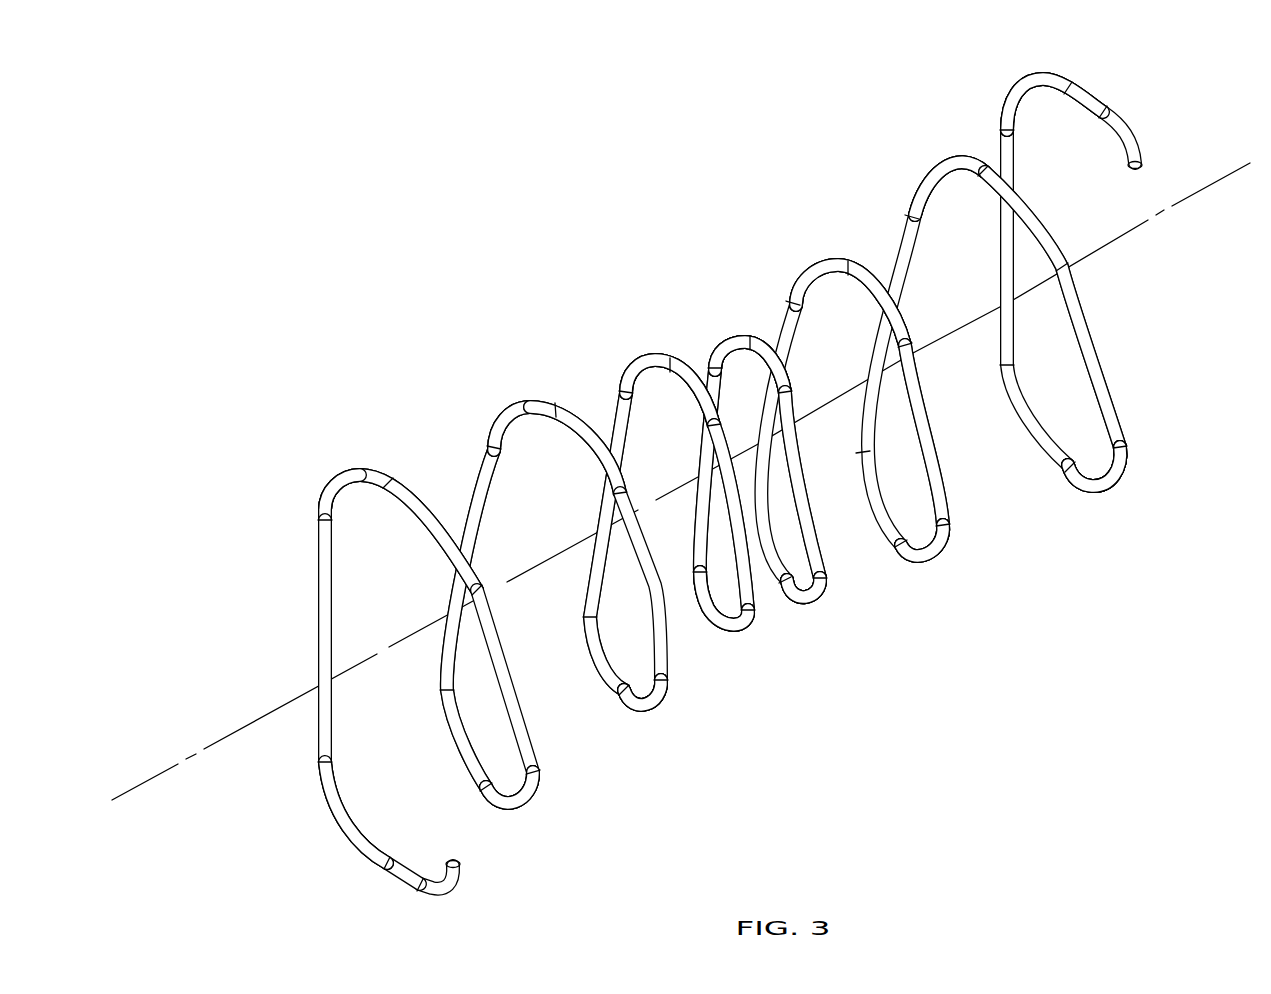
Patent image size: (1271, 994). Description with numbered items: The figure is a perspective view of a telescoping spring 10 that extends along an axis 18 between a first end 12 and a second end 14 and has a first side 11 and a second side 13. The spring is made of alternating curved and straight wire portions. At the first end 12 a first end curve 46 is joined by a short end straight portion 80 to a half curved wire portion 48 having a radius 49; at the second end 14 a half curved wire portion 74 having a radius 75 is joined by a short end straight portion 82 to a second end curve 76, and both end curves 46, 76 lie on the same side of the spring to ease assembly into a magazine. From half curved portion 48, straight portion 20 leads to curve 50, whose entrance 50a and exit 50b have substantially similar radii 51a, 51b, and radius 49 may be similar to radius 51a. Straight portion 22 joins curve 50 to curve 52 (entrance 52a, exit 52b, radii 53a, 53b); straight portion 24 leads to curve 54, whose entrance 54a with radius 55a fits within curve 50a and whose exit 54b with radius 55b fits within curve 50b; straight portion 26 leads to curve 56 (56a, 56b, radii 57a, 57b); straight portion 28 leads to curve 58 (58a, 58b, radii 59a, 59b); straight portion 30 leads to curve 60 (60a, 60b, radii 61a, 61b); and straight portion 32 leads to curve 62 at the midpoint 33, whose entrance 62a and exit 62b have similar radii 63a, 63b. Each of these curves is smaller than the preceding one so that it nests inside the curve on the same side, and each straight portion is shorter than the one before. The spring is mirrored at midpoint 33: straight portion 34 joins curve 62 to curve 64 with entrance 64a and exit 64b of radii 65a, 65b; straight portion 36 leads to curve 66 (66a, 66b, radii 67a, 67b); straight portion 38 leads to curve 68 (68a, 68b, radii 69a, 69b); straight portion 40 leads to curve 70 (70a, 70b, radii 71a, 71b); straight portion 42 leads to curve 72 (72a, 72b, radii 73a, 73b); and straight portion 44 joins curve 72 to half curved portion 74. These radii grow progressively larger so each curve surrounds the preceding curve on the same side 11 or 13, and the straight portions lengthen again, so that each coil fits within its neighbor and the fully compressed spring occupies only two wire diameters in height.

The telescoping spring 10 is at (544, 105).
The first side 11 is at (238, 455).
The first end 12 is at (294, 888).
The second side 13 is at (717, 864).
The second end 14 is at (1200, 52).
The axis 18 is at (1213, 183).
The straight portion 20 is at (312, 597).
The straight portion 22 is at (532, 740).
The straight portion 24 is at (476, 513).
The straight portion 26 is at (665, 652).
The straight portion 28 is at (617, 417).
The straight portion 30 is at (747, 595).
The straight portion 32 is at (707, 350).
The midpoint 33 is at (698, 468).
The straight portion 34 is at (828, 548).
The straight portion 36 is at (790, 301).
The straight portion 38 is at (943, 477).
The straight portion 40 is at (902, 235).
The straight portion 42 is at (1108, 395).
The straight portion 44 is at (1000, 133).
The first end curve 46 is at (450, 892).
The half curved wire portion 48 is at (340, 825).
The radius 49 is at (352, 806).
The curved portion 50 is at (392, 470).
The entrance of curve 50 50a is at (335, 480).
The exit of curve 50 50b is at (417, 498).
The radius 51a is at (352, 487).
The radius 51b is at (428, 532).
The curved portion 52 is at (492, 802).
The entrance of curve 52 52a is at (530, 808).
The exit of curve 52 52b is at (478, 792).
The radius 53a is at (520, 790).
The radius 53b is at (463, 737).
The curved portion 54 is at (556, 402).
The entrance of curve 54 54a is at (497, 423).
The exit of curve 54 54b is at (585, 430).
The radius 55a is at (525, 418).
The radius 55b is at (583, 455).
The curved portion 56 is at (626, 692).
The entrance of curve 56 56a is at (655, 708).
The exit of curve 56 56b is at (605, 686).
The radius 57a is at (648, 684).
The radius 57b is at (603, 652).
The curved portion 58 is at (668, 362).
The entrance of curve 58 58a is at (635, 363).
The exit of curve 58 58b is at (692, 370).
The radius 59a is at (645, 372).
The radius 59b is at (698, 403).
The curved portion 60 is at (722, 625).
The entrance of curve 60 60a is at (737, 627).
The exit of curve 60 60b is at (705, 630).
The radius 61a is at (737, 607).
The radius 61b is at (708, 578).
The curved portion 62 is at (752, 327).
The entrance of curve 62 62a is at (727, 347).
The exit of curve 62 62b is at (768, 340).
The radius 63a is at (733, 357).
The radius 63b is at (767, 380).
The curved portion 64 is at (793, 593).
The entrance of curve 64 64a is at (780, 600).
The exit of curve 64 64b is at (813, 590).
The radius 65a is at (805, 533).
The radius 65b is at (793, 547).
The curved portion 66 is at (848, 262).
The entrance of curve 66 66a is at (860, 268).
The exit of curve 66 66b is at (803, 277).
The radius 67a is at (873, 305).
The radius 67b is at (823, 275).
The curved portion 68 is at (900, 550).
The entrance of curve 68 68a is at (880, 537).
The exit of curve 68 68b is at (940, 555).
The radius 69a is at (887, 503).
The radius 69b is at (930, 540).
The curved portion 70 is at (985, 167).
The entrance of curve 70 70a is at (992, 170).
The exit of curve 70 70b is at (920, 188).
The radius 71a is at (1027, 222).
The radius 71b is at (948, 180).
The curved portion 72 is at (1065, 480).
The entrance of curve 72 72a is at (1030, 452).
The exit of curve 72 72b is at (1097, 490).
The radius 73a is at (1037, 423).
The radius 73b is at (1102, 470).
The half curved wire portion 74 is at (1025, 70).
The radius 75 is at (1035, 93).
The second end curve 76 is at (1140, 137).
The short end straight portion 80 is at (407, 884).
The short end straight portion 82 is at (1102, 112).